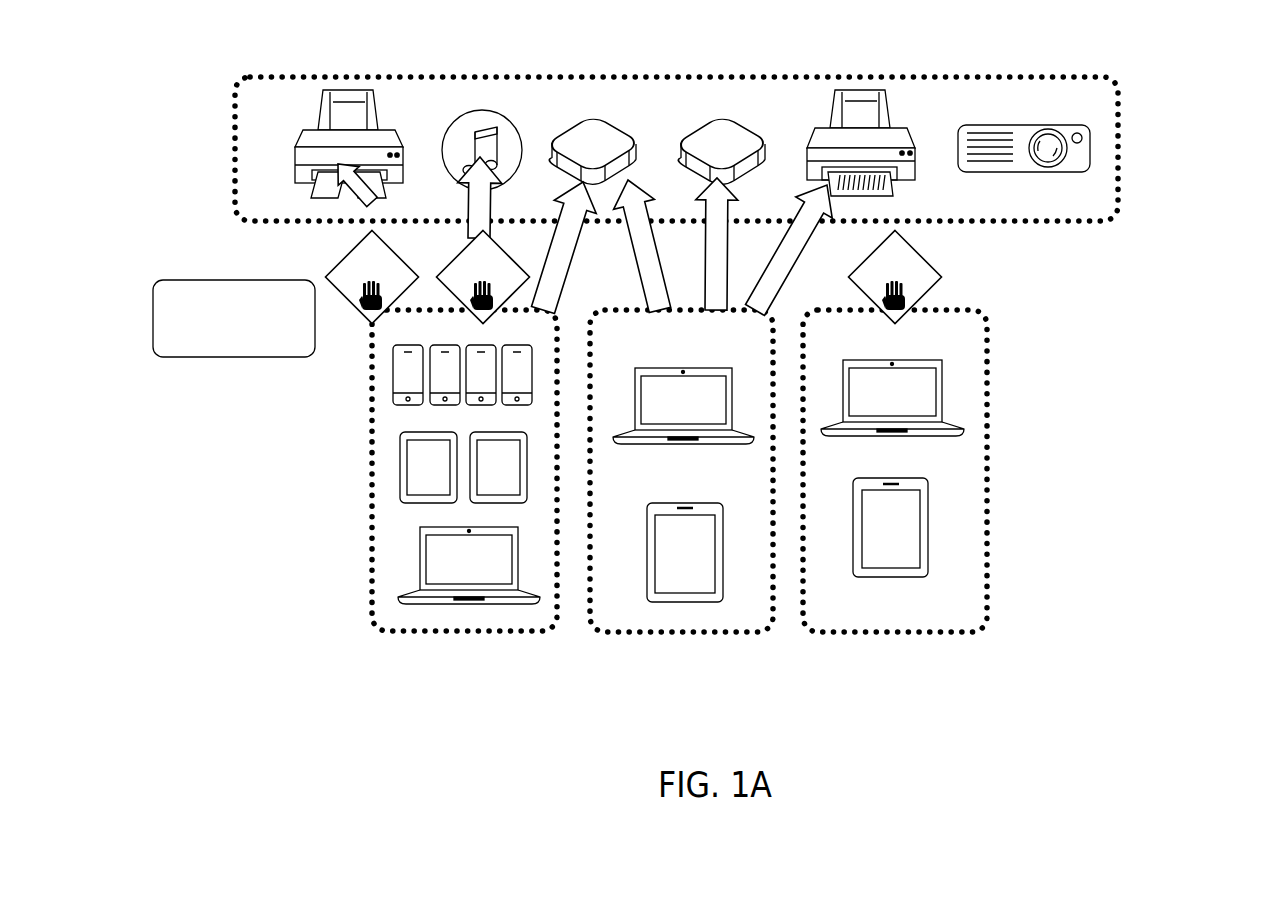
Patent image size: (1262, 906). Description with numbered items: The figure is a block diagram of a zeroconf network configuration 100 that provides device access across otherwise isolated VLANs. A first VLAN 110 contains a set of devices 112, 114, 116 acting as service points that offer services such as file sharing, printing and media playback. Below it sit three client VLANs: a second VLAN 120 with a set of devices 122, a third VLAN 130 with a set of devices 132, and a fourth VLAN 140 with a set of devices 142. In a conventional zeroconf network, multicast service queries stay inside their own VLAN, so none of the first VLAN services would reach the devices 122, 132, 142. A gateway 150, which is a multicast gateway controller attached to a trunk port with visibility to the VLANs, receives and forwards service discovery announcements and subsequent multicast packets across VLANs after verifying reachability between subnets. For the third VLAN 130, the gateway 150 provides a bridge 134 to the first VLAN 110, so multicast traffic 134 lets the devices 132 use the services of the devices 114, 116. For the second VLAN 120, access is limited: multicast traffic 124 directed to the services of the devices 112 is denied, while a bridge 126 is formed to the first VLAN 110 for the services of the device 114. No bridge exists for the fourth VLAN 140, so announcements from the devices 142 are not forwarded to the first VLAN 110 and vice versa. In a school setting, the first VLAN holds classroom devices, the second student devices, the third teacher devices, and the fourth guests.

The zeroconf network configuration 100 is at (1163, 246).
The first VLAN 110 is at (742, 132).
The devices 112 is at (444, 107).
The device 114 is at (613, 108).
The device 116 is at (762, 110).
The second VLAN 120 is at (414, 521).
The devices 122 is at (396, 545).
The multicast traffic 124 is at (355, 243).
The bridge 126 is at (564, 248).
The third VLAN 130 is at (669, 521).
The devices 132 is at (628, 573).
The bridge 134 is at (723, 247).
The fourth VLAN 140 is at (934, 521).
The devices 142 is at (950, 551).
The gateway 150 is at (218, 349).